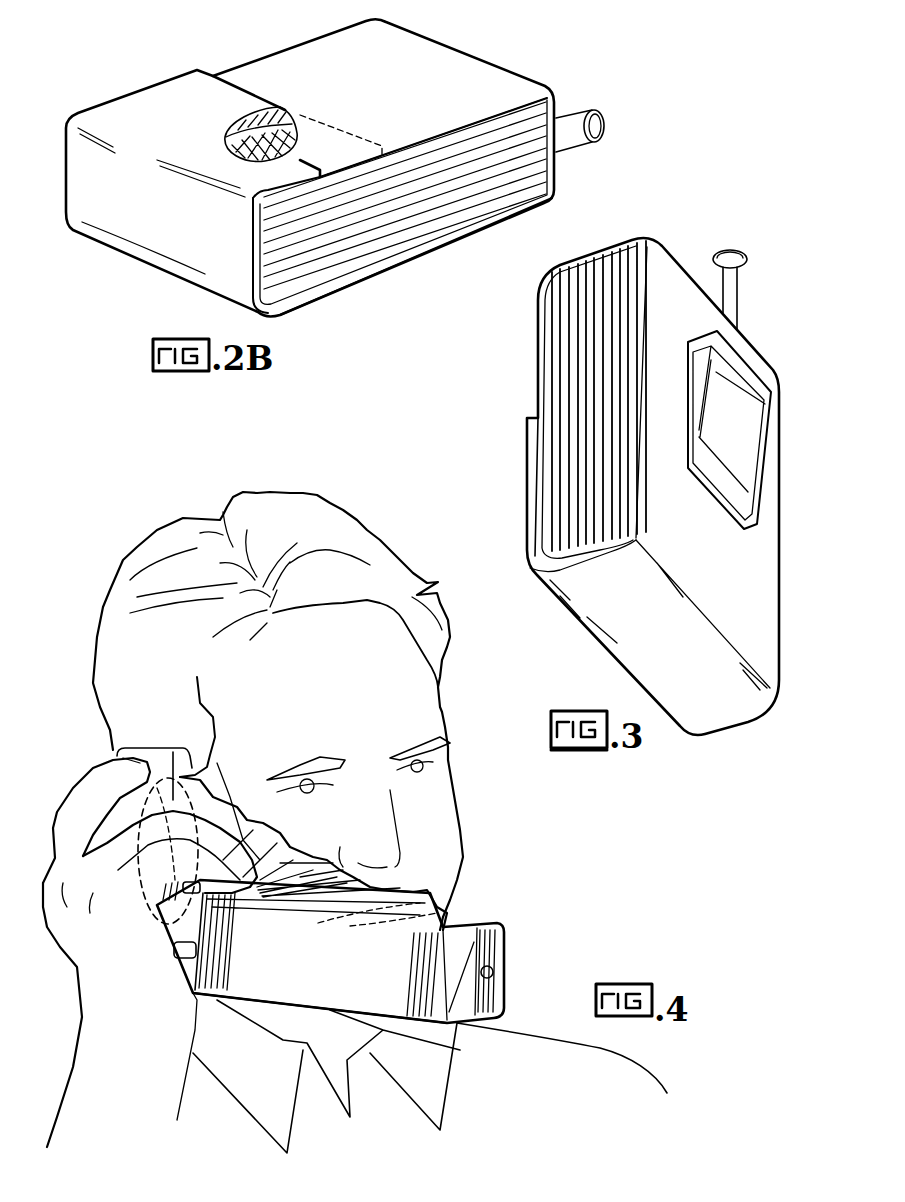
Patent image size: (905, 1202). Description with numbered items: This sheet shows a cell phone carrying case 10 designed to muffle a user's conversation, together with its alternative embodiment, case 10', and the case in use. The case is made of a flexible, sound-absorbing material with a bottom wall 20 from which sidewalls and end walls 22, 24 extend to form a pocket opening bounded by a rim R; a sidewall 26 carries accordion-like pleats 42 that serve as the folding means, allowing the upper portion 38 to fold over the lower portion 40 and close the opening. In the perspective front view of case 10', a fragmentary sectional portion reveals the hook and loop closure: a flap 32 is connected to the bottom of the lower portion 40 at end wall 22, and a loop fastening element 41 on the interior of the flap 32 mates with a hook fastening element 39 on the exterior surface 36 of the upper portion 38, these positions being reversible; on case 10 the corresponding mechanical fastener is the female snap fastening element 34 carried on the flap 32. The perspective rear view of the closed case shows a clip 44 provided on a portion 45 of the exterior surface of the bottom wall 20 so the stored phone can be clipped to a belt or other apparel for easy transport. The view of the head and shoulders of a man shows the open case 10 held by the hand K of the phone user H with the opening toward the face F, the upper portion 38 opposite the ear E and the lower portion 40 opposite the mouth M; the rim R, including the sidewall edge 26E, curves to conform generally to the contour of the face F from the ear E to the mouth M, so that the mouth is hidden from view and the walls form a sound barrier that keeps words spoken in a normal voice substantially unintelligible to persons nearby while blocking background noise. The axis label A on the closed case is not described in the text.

In FIG. 4, the cell phone carrying case 10 is at (343, 957).
In FIG. 2B, the case 10' is at (321, 159).
In FIG. 2B, the bottom wall 20 is at (492, 58).
In FIG. 3, the bottom wall 20 is at (748, 634).
In FIG. 4, the bottom wall 20 is at (257, 973).
In FIG. 4, the end wall 22 is at (457, 877).
In FIG. 4, the end wall 24 is at (115, 760).
In FIG. 4, the sidewall 26 is at (313, 845).
In FIG. 4, the sidewall edge 26E is at (313, 845).
In FIG. 2B, the flap 32 is at (120, 182).
In FIG. 3, the flap 32 is at (521, 494).
In FIG. 4, the flap 32 is at (459, 956).
In FIG. 4, the female snap fastening element 34 is at (490, 977).
In FIG. 2B, the exterior surface 36 is at (347, 58).
In FIG. 2B, the upper portion 38 is at (260, 53).
In FIG. 4, the upper portion 38 is at (188, 928).
In FIG. 2B, the hook fastening element 39 is at (300, 138).
In FIG. 2B, the lower portion 40 is at (409, 264).
In FIG. 4, the lower portion 40 is at (367, 996).
In FIG. 2B, the loop fastening element 41 is at (287, 118).
In FIG. 2B, the accordion-like pleats 42 is at (468, 202).
In FIG. 3, the accordion-like pleats 42 is at (575, 368).
In FIG. 4, the accordion-like pleats 42 is at (292, 845).
In FIG. 3, the clip 44 is at (743, 423).
In FIG. 3, the portion of the exterior surface of the bottom wall 45 is at (753, 560).
In FIG. 2B, the knob / axis A is at (567, 125).
In FIG. 3, the knob / axis A is at (737, 285).
In FIG. 4, the ear E is at (117, 812).
In FIG. 4, the face F is at (360, 698).
In FIG. 4, the cell phone user H is at (370, 522).
In FIG. 4, the hand K is at (74, 930).
In FIG. 4, the mouth M is at (443, 915).
In FIG. 4, the rim R is at (235, 800).